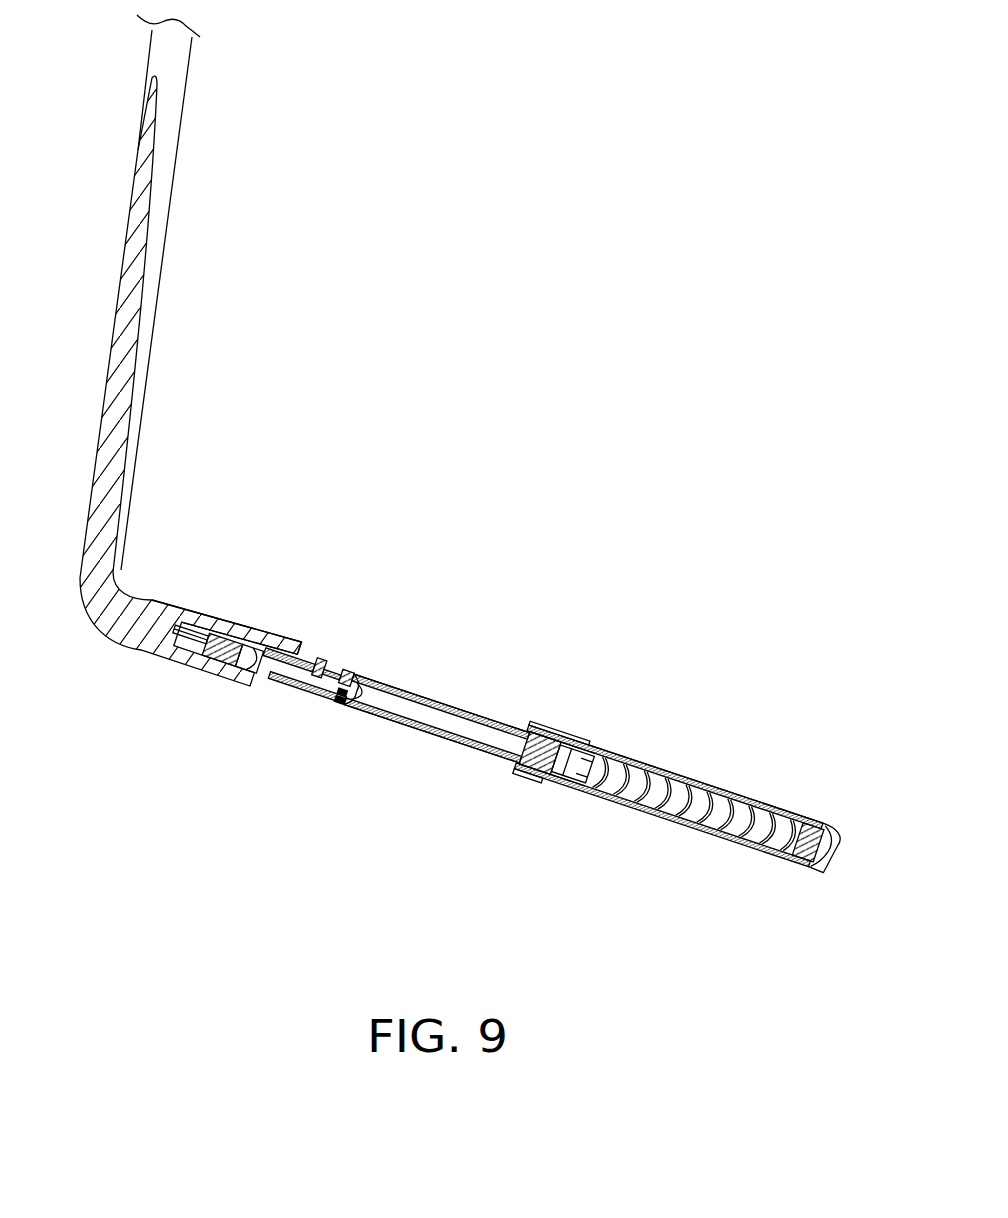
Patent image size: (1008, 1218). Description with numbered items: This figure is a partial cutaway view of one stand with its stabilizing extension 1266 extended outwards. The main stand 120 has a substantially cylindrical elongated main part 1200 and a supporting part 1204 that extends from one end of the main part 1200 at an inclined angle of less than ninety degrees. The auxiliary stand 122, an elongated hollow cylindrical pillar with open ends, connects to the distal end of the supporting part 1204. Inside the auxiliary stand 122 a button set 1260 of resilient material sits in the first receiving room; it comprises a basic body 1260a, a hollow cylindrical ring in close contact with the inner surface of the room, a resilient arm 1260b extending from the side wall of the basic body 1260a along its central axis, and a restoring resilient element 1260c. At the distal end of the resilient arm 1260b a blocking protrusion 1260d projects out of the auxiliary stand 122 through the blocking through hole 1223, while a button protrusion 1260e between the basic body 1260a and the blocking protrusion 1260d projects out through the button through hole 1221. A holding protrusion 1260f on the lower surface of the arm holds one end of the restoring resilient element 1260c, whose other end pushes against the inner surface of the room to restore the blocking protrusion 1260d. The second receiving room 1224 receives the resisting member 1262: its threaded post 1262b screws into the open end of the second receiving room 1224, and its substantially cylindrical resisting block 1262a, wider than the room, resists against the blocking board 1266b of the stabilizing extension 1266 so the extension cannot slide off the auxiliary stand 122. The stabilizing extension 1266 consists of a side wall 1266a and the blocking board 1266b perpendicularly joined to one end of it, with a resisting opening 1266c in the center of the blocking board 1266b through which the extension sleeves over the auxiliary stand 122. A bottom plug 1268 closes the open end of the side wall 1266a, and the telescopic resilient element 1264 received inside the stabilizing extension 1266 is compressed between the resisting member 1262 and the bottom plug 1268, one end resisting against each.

The main stand 120 is at (118, 128).
The main part 1200 is at (160, 192).
The supporting part 1204 is at (147, 600).
The auxiliary stand 122 is at (512, 730).
The button through hole 1221 is at (312, 660).
The blocking through hole 1223 is at (350, 672).
The second receiving room 1224 is at (455, 727).
The button set 1260 is at (298, 693).
The basic body 1260a is at (245, 680).
The resilient arm 1260b is at (250, 645).
The restoring resilient element 1260c is at (343, 703).
The blocking protrusion 1260d is at (343, 673).
The button protrusion 1260e is at (318, 660).
The holding protrusion 1260f is at (373, 703).
The resisting member 1262 is at (653, 898).
The resisting block 1262a is at (583, 790).
The threaded post 1262b is at (550, 782).
The telescopic resilient element 1264 is at (725, 836).
The stabilizing extension 1266 is at (713, 749).
The side wall 1266a is at (628, 752).
The blocking board 1266b is at (547, 730).
The resisting opening 1266c is at (530, 778).
The bottom plug 1268 is at (797, 863).